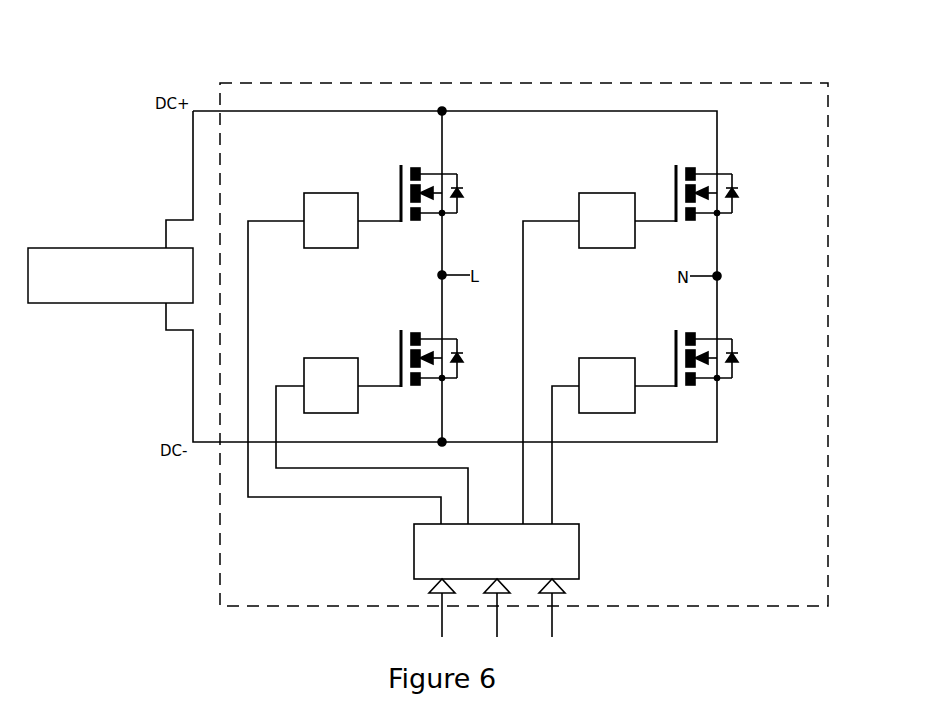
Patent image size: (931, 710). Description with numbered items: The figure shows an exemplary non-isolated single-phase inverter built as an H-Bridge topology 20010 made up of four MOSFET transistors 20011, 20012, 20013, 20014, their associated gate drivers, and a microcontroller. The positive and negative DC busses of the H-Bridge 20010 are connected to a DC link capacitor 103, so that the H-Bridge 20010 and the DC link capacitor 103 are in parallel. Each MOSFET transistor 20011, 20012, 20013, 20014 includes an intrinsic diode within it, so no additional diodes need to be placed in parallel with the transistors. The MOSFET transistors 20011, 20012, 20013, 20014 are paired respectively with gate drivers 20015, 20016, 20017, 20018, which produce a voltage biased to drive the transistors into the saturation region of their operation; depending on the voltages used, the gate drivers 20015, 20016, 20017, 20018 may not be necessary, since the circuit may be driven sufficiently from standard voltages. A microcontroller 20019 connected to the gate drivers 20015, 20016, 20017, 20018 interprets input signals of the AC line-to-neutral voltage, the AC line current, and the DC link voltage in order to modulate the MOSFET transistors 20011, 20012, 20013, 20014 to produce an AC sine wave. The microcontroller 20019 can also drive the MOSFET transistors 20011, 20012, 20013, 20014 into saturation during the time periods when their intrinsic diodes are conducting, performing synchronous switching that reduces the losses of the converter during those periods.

The DC link capacitor 103 is at (110, 248).
The H-Bridge topology 20010 is at (772, 83).
The MOSFET transistor 20011 is at (444, 192).
The MOSFET transistor 20012 is at (444, 357).
The MOSFET transistor 20013 is at (719, 192).
The MOSFET transistor 20014 is at (719, 357).
The gate driver 20015 is at (332, 193).
The gate driver 20016 is at (332, 358).
The gate driver 20017 is at (607, 193).
The gate driver 20018 is at (607, 358).
The microcontroller 20019 is at (579, 552).